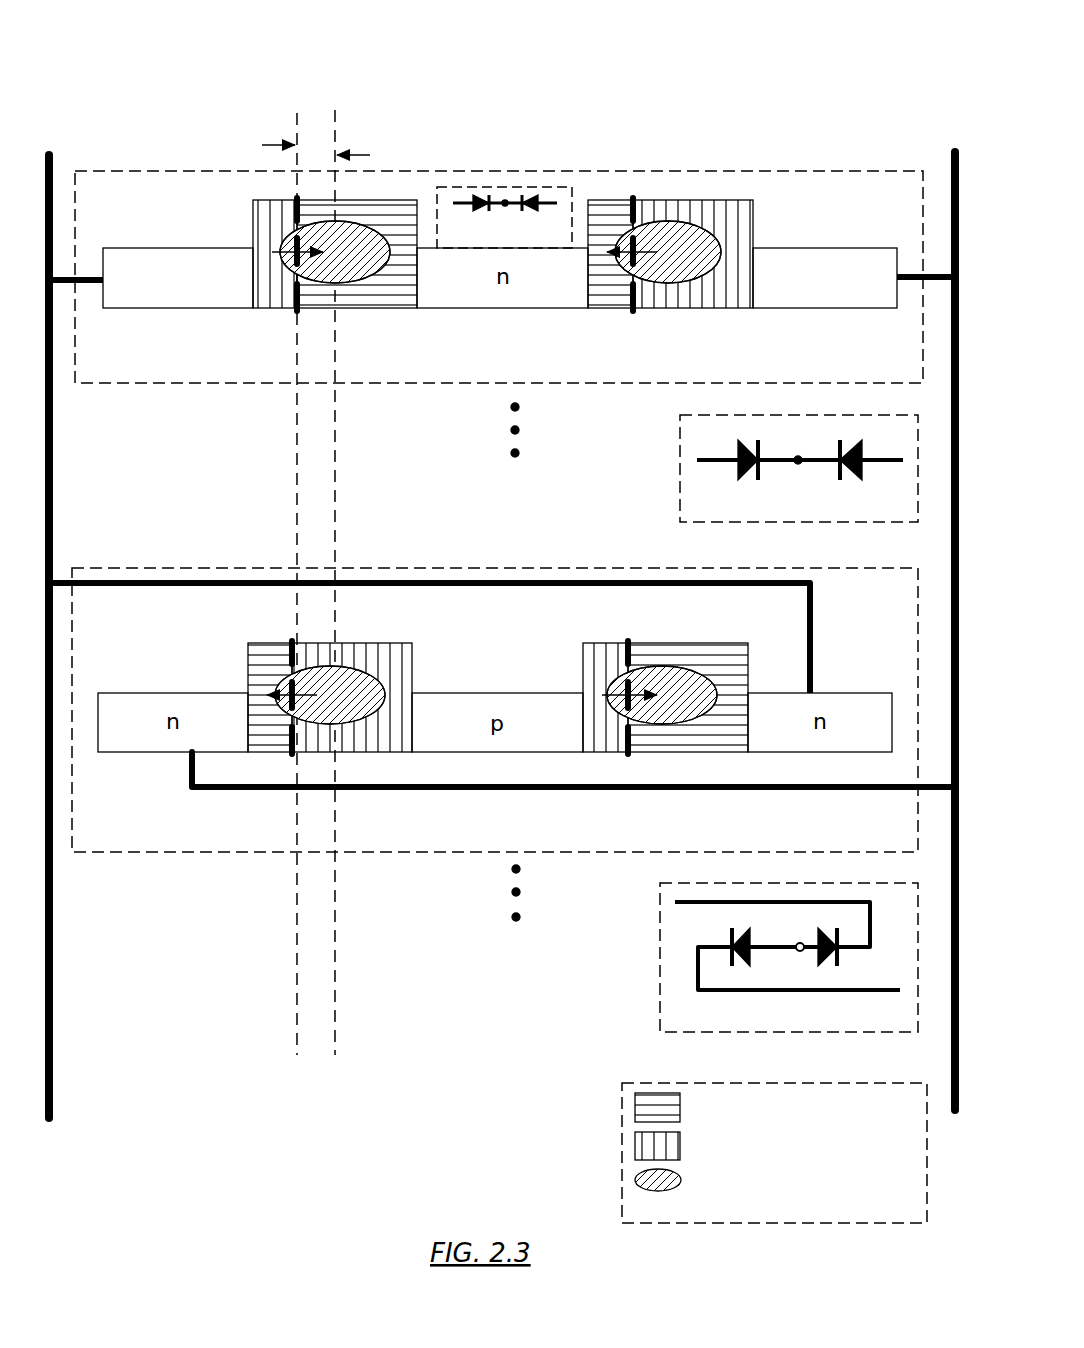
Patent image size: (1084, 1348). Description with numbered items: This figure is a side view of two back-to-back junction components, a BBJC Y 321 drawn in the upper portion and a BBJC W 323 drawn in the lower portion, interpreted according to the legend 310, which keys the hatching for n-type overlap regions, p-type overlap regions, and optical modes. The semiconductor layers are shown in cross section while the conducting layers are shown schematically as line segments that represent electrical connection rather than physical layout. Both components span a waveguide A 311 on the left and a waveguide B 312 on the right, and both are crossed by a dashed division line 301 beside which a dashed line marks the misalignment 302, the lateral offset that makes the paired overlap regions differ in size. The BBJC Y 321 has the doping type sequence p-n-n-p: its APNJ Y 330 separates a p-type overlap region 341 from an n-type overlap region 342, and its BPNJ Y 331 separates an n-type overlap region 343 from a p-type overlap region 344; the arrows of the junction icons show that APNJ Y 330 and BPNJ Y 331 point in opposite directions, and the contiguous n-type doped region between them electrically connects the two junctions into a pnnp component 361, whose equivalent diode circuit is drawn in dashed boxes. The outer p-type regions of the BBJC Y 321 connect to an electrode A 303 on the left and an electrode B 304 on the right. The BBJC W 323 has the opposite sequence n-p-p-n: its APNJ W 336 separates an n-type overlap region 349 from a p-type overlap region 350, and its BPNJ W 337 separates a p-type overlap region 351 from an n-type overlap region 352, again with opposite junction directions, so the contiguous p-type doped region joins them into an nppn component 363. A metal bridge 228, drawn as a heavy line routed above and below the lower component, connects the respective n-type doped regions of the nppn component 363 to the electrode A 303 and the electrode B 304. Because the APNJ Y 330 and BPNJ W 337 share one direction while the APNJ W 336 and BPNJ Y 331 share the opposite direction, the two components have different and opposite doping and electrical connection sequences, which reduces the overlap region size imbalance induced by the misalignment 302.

The division line 301 is at (337, 128).
The misalignment 302 is at (317, 135).
The electrode A 303 is at (58, 195).
The electrode B 304 is at (948, 160).
The waveguide A 311 is at (393, 183).
The waveguide B 312 is at (640, 188).
The BBJC Y 321 is at (499, 277).
The BBJC W 323 is at (495, 710).
The APNJ Y 330 is at (290, 313).
The BPNJ Y 331 is at (636, 313).
The APNJ W 336 is at (287, 758).
The BPNJ W 337 is at (632, 757).
The p-type overlap region 341 is at (275, 254).
The n-type overlap region 342 is at (357, 254).
The n-type overlap region 343 is at (610, 254).
The p-type overlap region 344 is at (693, 254).
The n-type overlap region 349 is at (270, 697).
The p-type overlap region 350 is at (352, 697).
The p-type overlap region 351 is at (605, 697).
The n-type overlap region 352 is at (688, 697).
The pnnp component 361 is at (677, 354).
The nppn component 363 is at (789, 957).
The legend 310 is at (774, 1153).
The metal bridge 228 is at (433, 780).